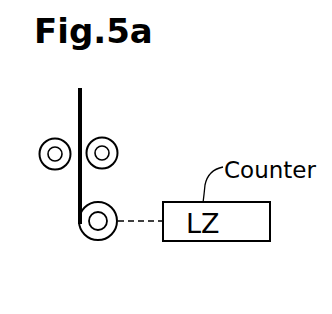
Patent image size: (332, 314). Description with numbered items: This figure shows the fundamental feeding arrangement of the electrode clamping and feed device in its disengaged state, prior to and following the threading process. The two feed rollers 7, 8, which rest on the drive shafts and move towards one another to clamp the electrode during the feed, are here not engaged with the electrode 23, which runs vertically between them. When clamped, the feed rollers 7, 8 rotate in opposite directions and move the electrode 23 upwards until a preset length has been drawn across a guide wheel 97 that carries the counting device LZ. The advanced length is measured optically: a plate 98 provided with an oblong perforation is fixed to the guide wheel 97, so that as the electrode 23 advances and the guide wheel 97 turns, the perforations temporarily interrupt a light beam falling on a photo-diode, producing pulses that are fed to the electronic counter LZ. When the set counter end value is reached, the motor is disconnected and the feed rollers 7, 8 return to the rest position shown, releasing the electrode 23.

The feed roller 7 is at (56, 138).
The feed roller 8 is at (103, 137).
The electrode 23 is at (78, 208).
The guide wheel 97 is at (108, 203).
The plate 98 is at (99, 223).